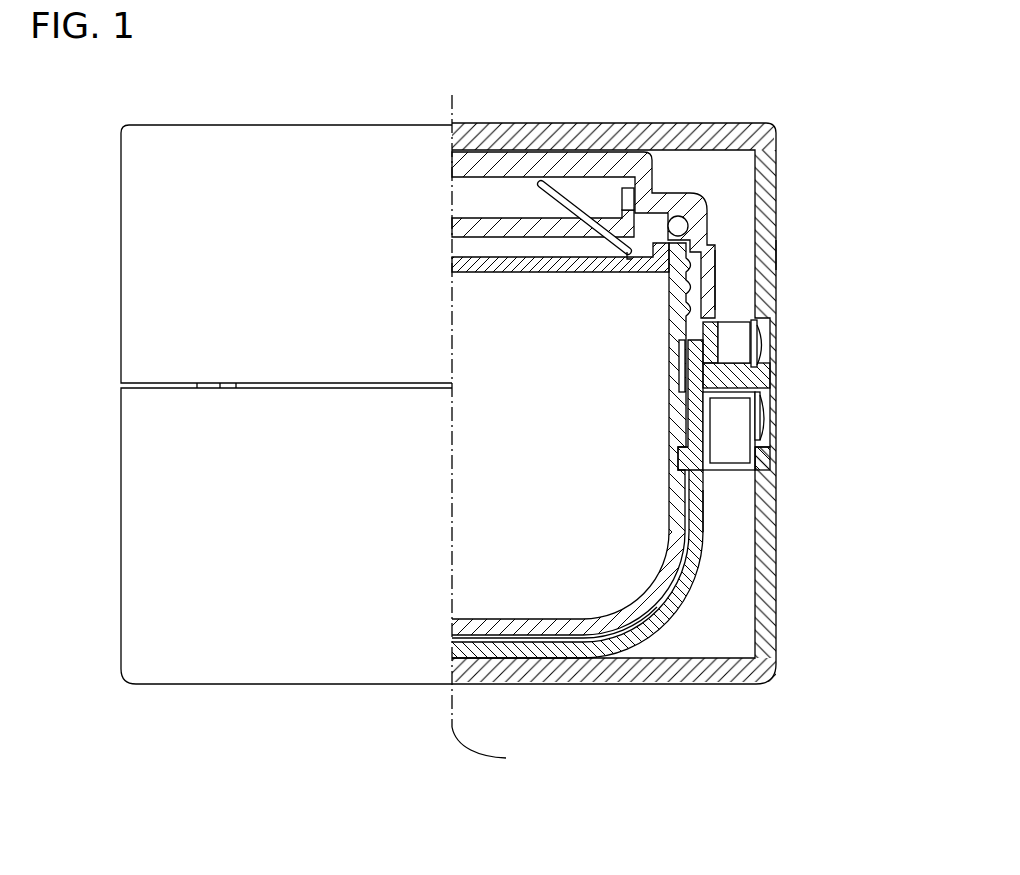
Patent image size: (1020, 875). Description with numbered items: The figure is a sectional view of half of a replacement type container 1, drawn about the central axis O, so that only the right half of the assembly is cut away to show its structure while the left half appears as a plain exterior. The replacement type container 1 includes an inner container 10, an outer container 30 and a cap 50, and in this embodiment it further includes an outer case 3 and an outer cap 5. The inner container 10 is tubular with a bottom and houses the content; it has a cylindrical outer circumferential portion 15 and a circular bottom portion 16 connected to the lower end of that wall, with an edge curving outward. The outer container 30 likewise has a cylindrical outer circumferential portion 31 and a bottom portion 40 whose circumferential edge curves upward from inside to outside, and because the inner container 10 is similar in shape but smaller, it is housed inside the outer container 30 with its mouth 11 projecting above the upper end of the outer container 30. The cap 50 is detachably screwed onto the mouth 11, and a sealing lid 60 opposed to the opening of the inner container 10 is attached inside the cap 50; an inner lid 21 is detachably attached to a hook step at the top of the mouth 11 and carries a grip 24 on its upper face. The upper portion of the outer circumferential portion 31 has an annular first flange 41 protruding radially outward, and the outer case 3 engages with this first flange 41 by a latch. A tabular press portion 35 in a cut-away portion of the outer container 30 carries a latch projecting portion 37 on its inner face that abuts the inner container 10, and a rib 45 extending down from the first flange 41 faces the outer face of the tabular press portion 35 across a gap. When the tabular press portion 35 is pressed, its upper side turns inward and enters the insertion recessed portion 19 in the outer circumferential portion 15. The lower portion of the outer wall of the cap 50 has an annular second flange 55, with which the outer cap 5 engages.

The replacement type container 1 is at (812, 90).
The outer case 3 is at (778, 571).
The outer cap 5 is at (778, 256).
The inner container 10 is at (708, 324).
The mouth 11 is at (716, 264).
The outer circumferential portion 15 is at (703, 531).
The bottom portion 16 is at (529, 622).
The insertion recessed portion 19 is at (683, 364).
The inner lid 21 is at (565, 273).
The grip 24 is at (572, 198).
The outer container 30 is at (722, 503).
The outer circumferential portion 31 is at (695, 493).
The tabular press portion 35 is at (702, 387).
The latch projecting portion 37 is at (692, 455).
The bottom portion 40 is at (568, 651).
The first flange 41 is at (745, 400).
The rib 45 is at (728, 442).
The cap 50 is at (728, 205).
The second flange 55 is at (748, 362).
The sealing lid 60 is at (518, 227).
The central axis O is at (491, 751).